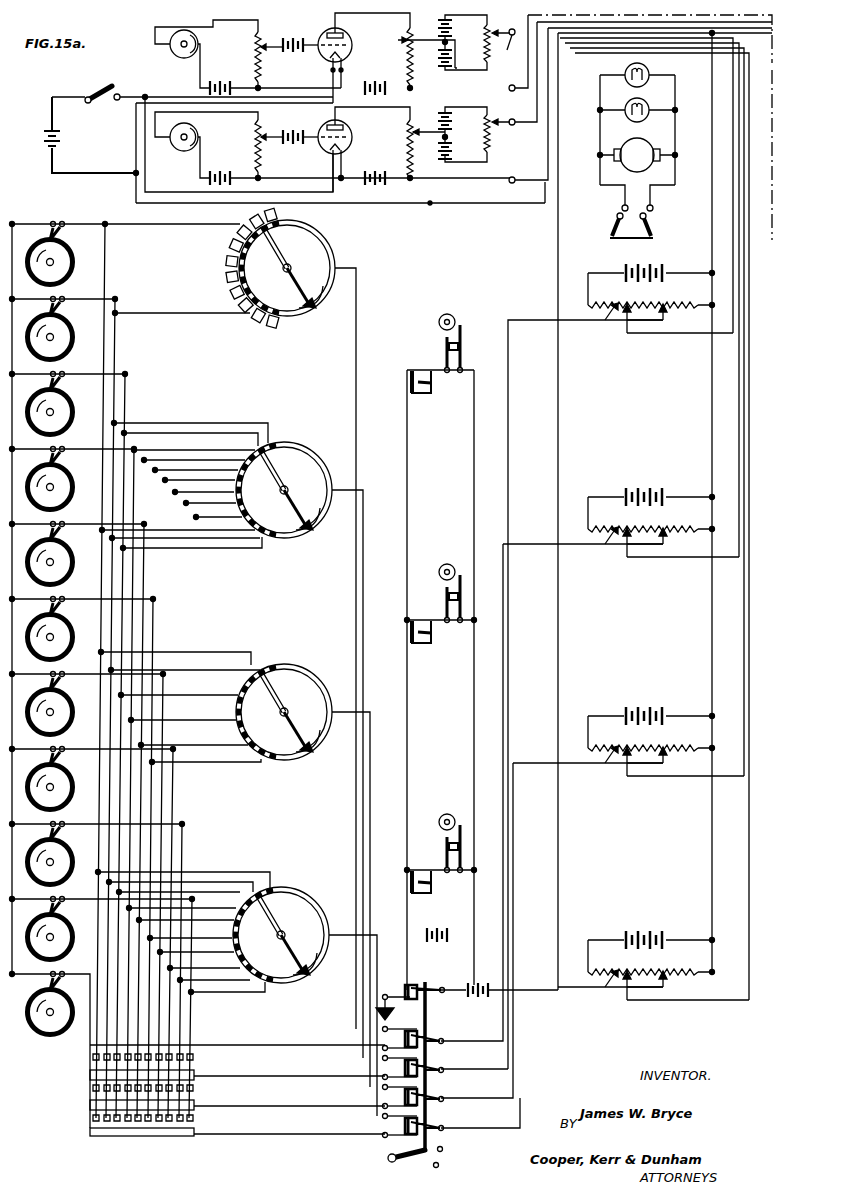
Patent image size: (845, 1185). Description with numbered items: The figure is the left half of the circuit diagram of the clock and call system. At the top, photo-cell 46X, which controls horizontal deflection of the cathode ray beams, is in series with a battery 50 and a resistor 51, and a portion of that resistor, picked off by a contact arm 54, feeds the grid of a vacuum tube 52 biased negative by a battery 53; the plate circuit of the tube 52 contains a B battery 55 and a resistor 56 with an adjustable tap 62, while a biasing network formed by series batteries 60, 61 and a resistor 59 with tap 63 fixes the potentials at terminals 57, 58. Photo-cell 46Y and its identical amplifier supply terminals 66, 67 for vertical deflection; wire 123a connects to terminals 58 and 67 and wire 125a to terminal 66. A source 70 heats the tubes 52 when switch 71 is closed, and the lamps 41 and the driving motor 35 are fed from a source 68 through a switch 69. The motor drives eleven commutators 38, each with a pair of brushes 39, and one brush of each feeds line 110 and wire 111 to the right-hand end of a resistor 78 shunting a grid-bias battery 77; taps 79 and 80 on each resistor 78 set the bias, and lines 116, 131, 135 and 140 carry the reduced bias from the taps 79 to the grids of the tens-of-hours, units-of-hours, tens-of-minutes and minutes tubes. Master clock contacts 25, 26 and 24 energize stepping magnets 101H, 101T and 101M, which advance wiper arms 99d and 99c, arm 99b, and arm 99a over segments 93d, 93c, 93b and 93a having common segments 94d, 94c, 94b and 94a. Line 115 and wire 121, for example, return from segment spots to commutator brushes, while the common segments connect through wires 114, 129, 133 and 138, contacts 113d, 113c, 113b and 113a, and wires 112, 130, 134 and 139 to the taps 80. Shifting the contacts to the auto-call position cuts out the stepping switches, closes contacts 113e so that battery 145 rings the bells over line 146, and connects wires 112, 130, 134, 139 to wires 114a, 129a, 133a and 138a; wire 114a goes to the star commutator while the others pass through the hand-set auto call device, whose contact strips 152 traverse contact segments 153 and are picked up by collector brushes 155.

The photo-cell 46X is at (184, 30).
The battery 50 is at (216, 80).
The contact arm 54 is at (262, 40).
The resistor 51 is at (264, 66).
The battery 53 is at (293, 38).
The vacuum tube 52 is at (340, 35).
The switch 71 is at (97, 90).
The source 70 is at (40, 140).
The photo-cell 46Y is at (323, 150).
The B battery 55 is at (372, 80).
The resistor 56 is at (400, 33).
The contact tap 62 is at (437, 77).
The battery 60 is at (443, 20).
The battery 61 is at (450, 66).
The contact tap 63 is at (496, 43).
The resistor 59 is at (509, 29).
The amplifier terminal 57 is at (504, 52).
The amplifier terminal 58 is at (510, 86).
The terminal 66 is at (511, 119).
The terminal 67 is at (511, 177).
The wire 123a is at (527, 133).
The wire 125a is at (545, 182).
The line 110 is at (430, 203).
The wire 116 is at (731, 207).
The lamps 41 is at (650, 108).
The driving motor 35 is at (643, 148).
The switch 69 is at (618, 208).
The source 68 is at (614, 245).
The wire 111 is at (712, 128).
The battery 77 is at (660, 266).
The resistor 78 is at (603, 318).
The contact tap 79 is at (633, 334).
The contact tap 80 is at (665, 320).
The line 131 is at (737, 558).
The wire 135 is at (742, 778).
The line 140 is at (714, 1001).
The line 146 is at (558, 866).
The wire 112 is at (508, 432).
The wire 130 is at (520, 545).
The wire 134 is at (510, 1071).
The wire 139 is at (515, 1099).
The battery 145 is at (490, 1000).
The master clock controlled contacts 25 is at (462, 350).
The stepping switch magnet 101H is at (424, 384).
The master clock controlled contacts 26 is at (462, 610).
The stepping switch magnet 101T is at (424, 634).
The master clock control contacts 24 is at (462, 860).
The stepping switch magnet 101M is at (424, 884).
The contacts 113e is at (418, 990).
The contacts 113d is at (432, 1041).
The contacts 113c is at (432, 1070).
The contacts 113b is at (432, 1099).
The contacts 113a is at (432, 1128).
The wire 114 is at (360, 340).
The line 129 is at (363, 594).
The wire 133 is at (371, 768).
The wire 138 is at (377, 945).
The wire 114a is at (285, 1044).
The wire 129a is at (292, 1074).
The wire 133a is at (292, 1104).
The wire 138a is at (292, 1133).
The contact strip 152 is at (194, 1135).
The contact segments 153 is at (196, 1118).
The collector brush 155 is at (90, 1132).
The wire 121 is at (106, 357).
The line 115 is at (172, 315).
The commutator 38 is at (73, 252).
The brushes 39 is at (66, 228).
The common segment 94d is at (330, 240).
The segments 93d is at (232, 283).
The wiper arm 99d is at (326, 304).
The common segment 94c is at (318, 455).
The segments 93c is at (258, 545).
The wiper arm 99c is at (324, 526).
The common segment 94b is at (318, 677).
The segments 93b is at (258, 763).
The wiper arm 99b is at (322, 752).
The common segment 94a is at (318, 900).
The segments 93a is at (258, 990).
The wiper arm 99a is at (320, 972).